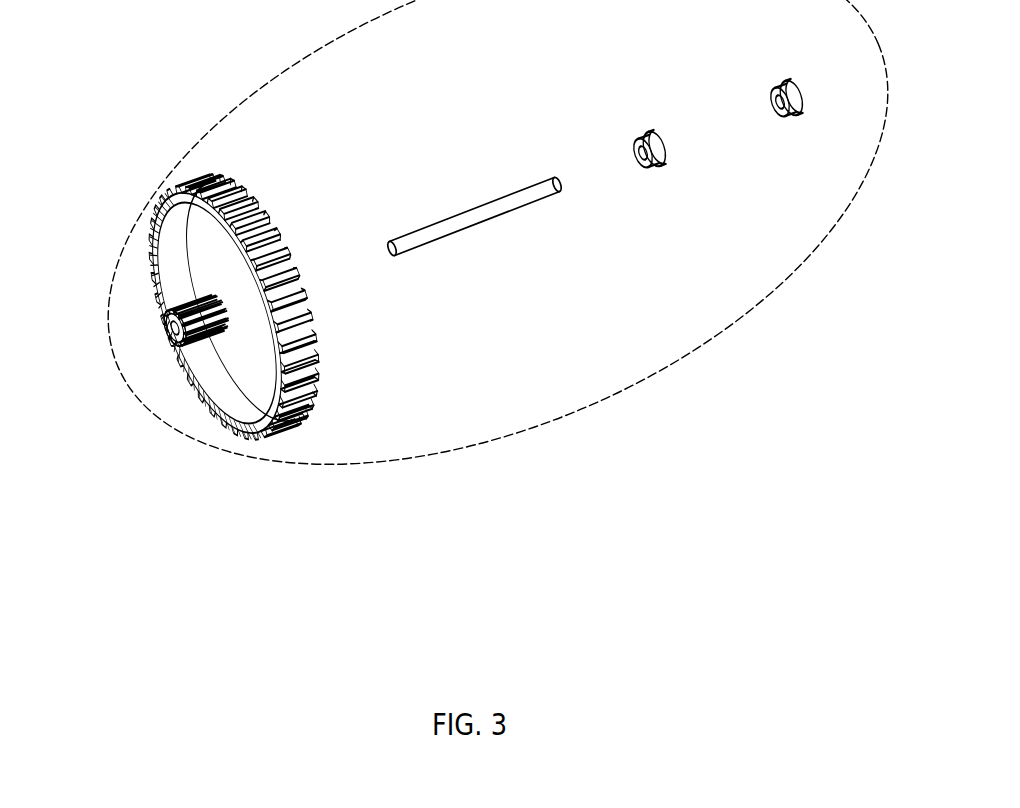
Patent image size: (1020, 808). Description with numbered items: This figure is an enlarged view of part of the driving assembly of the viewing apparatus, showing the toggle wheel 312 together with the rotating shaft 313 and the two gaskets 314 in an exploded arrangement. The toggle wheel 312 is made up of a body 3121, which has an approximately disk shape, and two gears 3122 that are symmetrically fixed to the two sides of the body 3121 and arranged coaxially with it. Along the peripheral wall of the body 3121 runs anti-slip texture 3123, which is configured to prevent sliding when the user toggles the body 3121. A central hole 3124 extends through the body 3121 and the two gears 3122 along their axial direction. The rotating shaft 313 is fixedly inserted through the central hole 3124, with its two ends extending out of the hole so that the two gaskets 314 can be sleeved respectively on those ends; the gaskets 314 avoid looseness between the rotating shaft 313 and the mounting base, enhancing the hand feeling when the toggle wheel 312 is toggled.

The toggle wheel 312 is at (317, 524).
The body 3121 is at (242, 383).
The gear 3122 is at (205, 347).
The anti-slip texture 3123 is at (203, 187).
The central hole 3124 is at (171, 327).
The rotating shaft 313 is at (509, 202).
The gasket 314 is at (643, 130).